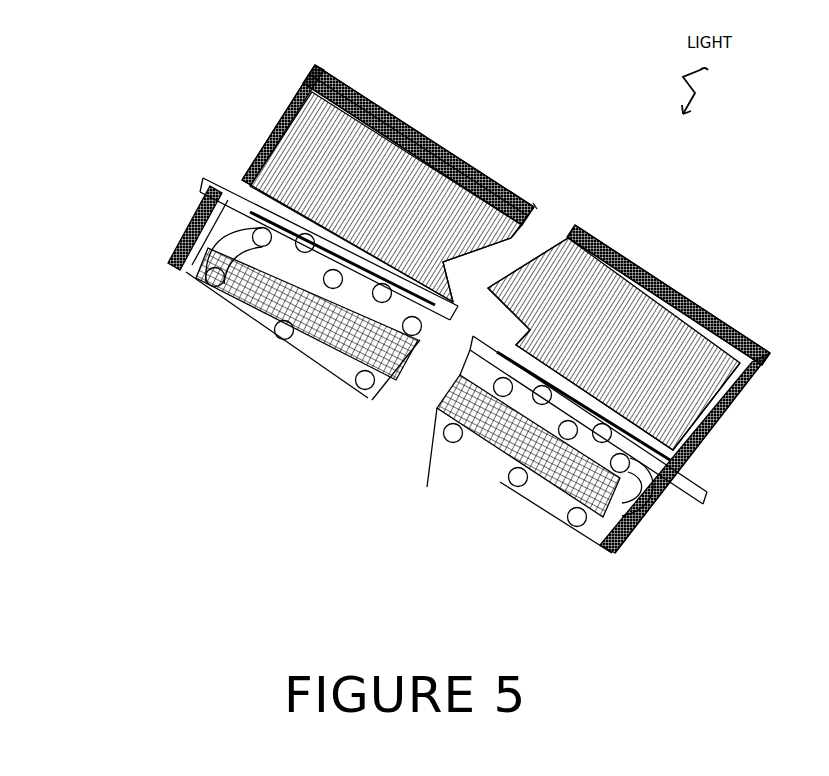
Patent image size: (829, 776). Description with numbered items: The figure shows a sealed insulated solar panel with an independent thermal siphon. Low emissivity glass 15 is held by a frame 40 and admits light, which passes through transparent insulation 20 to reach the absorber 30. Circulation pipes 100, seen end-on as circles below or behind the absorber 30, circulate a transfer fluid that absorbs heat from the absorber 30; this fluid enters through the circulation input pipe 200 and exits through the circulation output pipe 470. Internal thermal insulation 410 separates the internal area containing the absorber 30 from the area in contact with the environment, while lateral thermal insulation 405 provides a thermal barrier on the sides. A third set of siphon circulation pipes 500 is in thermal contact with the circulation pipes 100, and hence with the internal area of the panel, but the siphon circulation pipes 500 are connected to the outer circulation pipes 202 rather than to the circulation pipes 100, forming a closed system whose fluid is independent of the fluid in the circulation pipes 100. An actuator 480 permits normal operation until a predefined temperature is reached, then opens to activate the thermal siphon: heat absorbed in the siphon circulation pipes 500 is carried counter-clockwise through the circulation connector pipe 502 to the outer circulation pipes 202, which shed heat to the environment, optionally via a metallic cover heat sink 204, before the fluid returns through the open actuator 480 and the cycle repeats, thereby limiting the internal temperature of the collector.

The low emissivity glass 15 is at (427, 157).
The frame 40 is at (287, 121).
The transparent insulation 20 is at (335, 185).
The lateral thermal insulation 405 is at (210, 172).
The circulation output pipe 470 is at (226, 191).
The absorber 30 is at (227, 234).
The circulation connector pipe 502 is at (205, 260).
The internal thermal insulation 410 is at (290, 306).
The actuator 480 is at (444, 436).
The outer circulation pipes 202 is at (568, 516).
The siphon circulation pipes 500 is at (265, 247).
The circulation pipes 100 is at (385, 241).
The circulation input pipe 200 is at (683, 497).
The metallic cover heat sink 204 is at (588, 540).